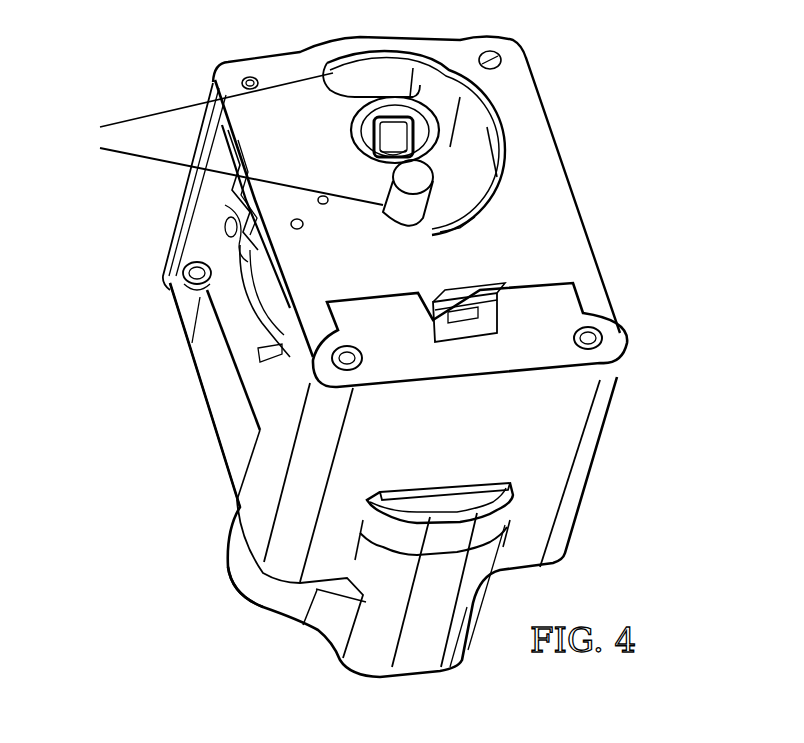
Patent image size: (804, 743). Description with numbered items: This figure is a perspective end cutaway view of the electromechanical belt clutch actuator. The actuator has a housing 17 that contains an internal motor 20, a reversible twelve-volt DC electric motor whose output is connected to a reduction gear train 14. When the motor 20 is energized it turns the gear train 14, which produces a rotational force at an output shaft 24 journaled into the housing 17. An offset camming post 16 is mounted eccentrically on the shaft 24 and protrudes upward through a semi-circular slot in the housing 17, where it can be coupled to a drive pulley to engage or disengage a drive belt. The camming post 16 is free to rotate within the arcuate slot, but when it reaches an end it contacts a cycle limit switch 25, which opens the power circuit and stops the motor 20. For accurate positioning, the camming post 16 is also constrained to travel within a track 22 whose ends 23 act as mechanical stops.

The reduction gear train 14 is at (212, 372).
The offset camming post 16 is at (420, 187).
The housing 17 is at (497, 441).
The motor 20 is at (238, 577).
The track 22 is at (450, 103).
The ends of track 23 is at (221, 217).
The output shaft 24 is at (390, 120).
The cycle limit switch 25 is at (230, 222).